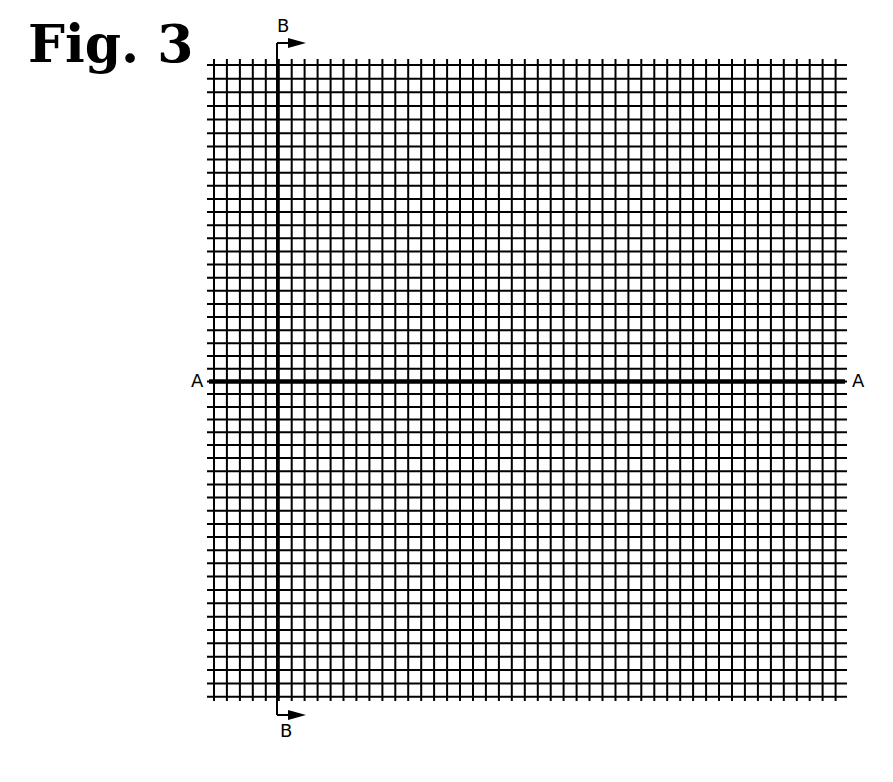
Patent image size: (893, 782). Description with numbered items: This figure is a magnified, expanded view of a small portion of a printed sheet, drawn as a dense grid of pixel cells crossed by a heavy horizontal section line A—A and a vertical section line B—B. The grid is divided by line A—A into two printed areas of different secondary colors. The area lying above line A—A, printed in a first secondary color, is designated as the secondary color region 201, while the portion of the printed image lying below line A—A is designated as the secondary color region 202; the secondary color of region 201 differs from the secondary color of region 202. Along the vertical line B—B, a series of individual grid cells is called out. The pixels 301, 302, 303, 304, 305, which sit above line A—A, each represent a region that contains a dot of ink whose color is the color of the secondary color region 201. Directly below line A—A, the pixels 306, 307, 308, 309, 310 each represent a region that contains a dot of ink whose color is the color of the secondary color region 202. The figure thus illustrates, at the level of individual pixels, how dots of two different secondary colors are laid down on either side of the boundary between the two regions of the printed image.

The secondary color region 201 is at (513, 87).
The secondary color region 202 is at (513, 670).
The pixel 301 is at (268, 318).
The pixel 302 is at (268, 335).
The pixel 303 is at (270, 350).
The pixel 304 is at (270, 360).
The pixel 305 is at (272, 373).
The pixel 306 is at (267, 388).
The pixel 307 is at (267, 400).
The pixel 308 is at (267, 415).
The pixel 309 is at (270, 427).
The pixel 310 is at (270, 442).